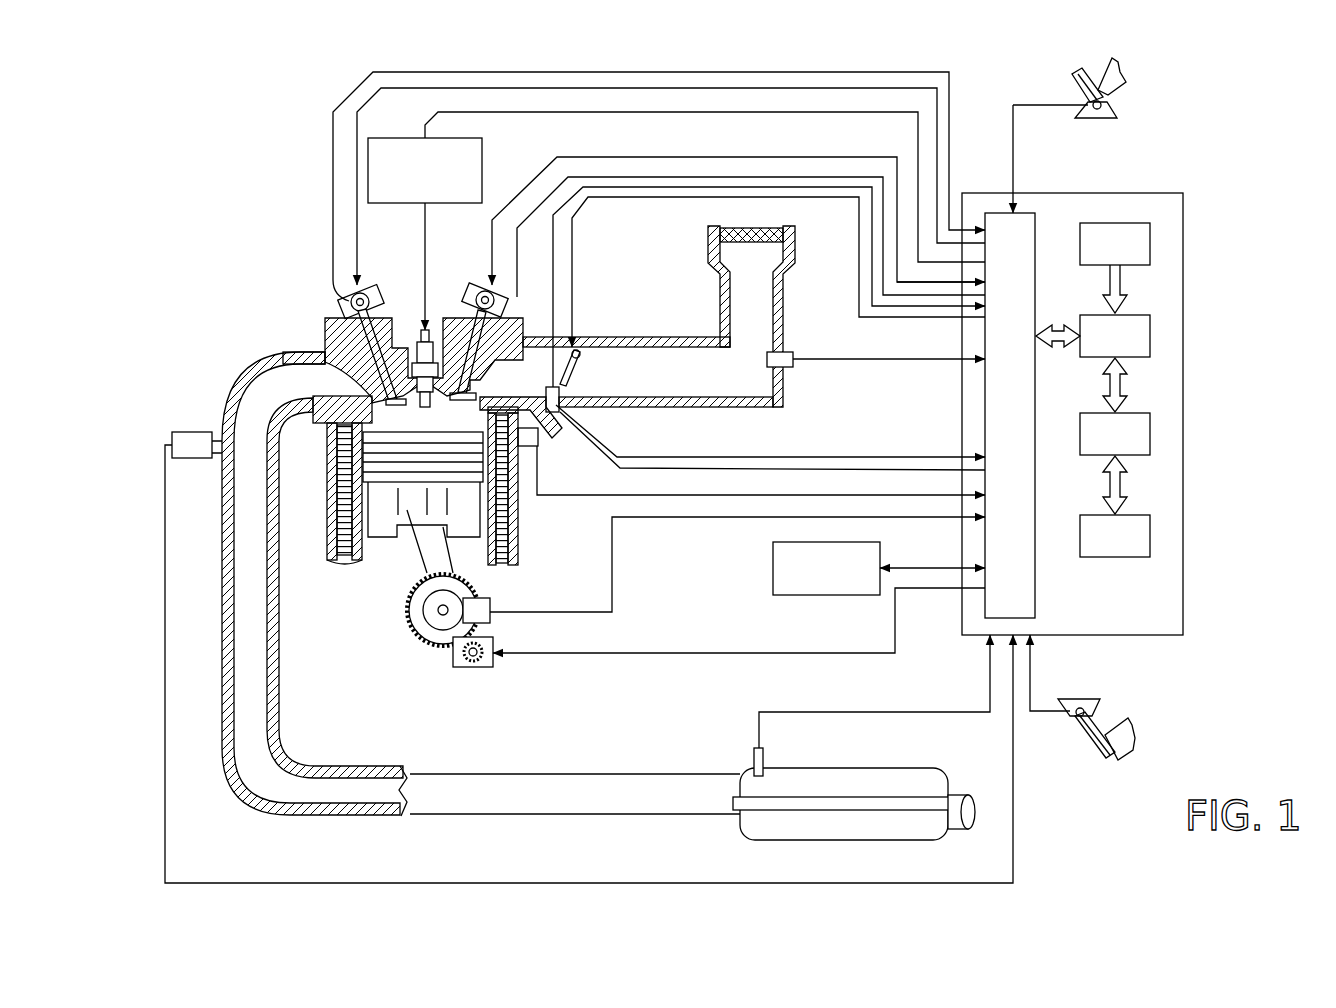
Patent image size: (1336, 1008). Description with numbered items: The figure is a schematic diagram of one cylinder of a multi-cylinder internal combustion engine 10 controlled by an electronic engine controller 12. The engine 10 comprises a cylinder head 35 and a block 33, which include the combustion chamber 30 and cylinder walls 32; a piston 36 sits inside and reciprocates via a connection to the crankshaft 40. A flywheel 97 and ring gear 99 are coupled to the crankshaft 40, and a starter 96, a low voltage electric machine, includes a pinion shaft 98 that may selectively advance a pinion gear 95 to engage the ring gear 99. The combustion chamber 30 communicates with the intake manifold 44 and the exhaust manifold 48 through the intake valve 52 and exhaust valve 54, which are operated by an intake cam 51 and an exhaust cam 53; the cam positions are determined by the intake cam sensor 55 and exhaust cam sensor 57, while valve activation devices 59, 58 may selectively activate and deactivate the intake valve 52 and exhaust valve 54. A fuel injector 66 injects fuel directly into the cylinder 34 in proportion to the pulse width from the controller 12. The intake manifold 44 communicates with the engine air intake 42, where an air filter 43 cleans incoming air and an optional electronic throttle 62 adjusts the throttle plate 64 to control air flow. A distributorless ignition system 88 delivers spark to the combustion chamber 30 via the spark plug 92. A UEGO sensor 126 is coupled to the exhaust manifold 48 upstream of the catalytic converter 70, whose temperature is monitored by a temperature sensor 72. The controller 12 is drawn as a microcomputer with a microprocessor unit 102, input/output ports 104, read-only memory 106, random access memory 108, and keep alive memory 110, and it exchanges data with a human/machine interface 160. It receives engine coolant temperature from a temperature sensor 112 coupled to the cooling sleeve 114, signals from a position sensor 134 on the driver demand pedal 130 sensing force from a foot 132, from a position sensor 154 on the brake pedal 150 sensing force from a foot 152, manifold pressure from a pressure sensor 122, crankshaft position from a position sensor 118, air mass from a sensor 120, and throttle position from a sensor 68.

The internal combustion engine 10 is at (263, 273).
The electronic engine controller 12 is at (1172, 193).
The combustion chamber 30 is at (338, 508).
The cylinder walls 32 is at (365, 552).
The block 33 is at (323, 452).
The cylinder 34 is at (396, 548).
The cylinder head 35 is at (320, 320).
The piston 36 is at (407, 510).
The crankshaft 40 is at (427, 643).
The engine air intake 42 is at (703, 250).
The air filter 43 is at (772, 245).
The intake manifold 44 is at (553, 387).
The exhaust manifold 48 is at (311, 392).
The intake cam 51 is at (480, 292).
The intake valve 52 is at (478, 380).
The exhaust cam 53 is at (365, 296).
The exhaust valve 54 is at (340, 368).
The intake cam sensor 55 is at (500, 303).
The exhaust cam sensor 57 is at (352, 302).
The valve activation device 58 is at (368, 300).
The valve activation device 59 is at (478, 302).
The electronic throttle 62 is at (580, 368).
The throttle plate 64 is at (567, 385).
The fuel injector 66 is at (527, 440).
The throttle position sensor 68 is at (570, 350).
The catalytic converter 70 is at (772, 768).
The temperature sensor 72 is at (763, 752).
The distributorless ignition system 88 is at (382, 138).
The spark plug 92 is at (428, 325).
The pinion gear 95 is at (476, 668).
The starter 96 is at (490, 667).
The flywheel 97 is at (410, 618).
The pinion shaft 98 is at (463, 664).
The ring gear 99 is at (437, 655).
The microprocessor unit 102 is at (1152, 328).
The input/output ports 104 is at (1037, 223).
The read-only memory 106 is at (1152, 243).
The random access memory 108 is at (1152, 432).
The keep alive memory 110 is at (1152, 528).
The temperature sensor 112 is at (761, 470).
The cooling sleeve 114 is at (515, 522).
The position sensor 118 is at (490, 603).
The air mass sensor 120 is at (793, 355).
The pressure sensor 122 is at (565, 410).
The Universal Exhaust Gas Oxygen sensor 126 is at (172, 436).
The driver demand pedal 130 is at (1070, 86).
The foot 132 is at (1115, 65).
The position sensor 134 is at (1110, 107).
The brake pedal 150 is at (1102, 752).
The foot 152 is at (1133, 722).
The position sensor 154 is at (1060, 699).
The human/machine interface 160 is at (879, 568).